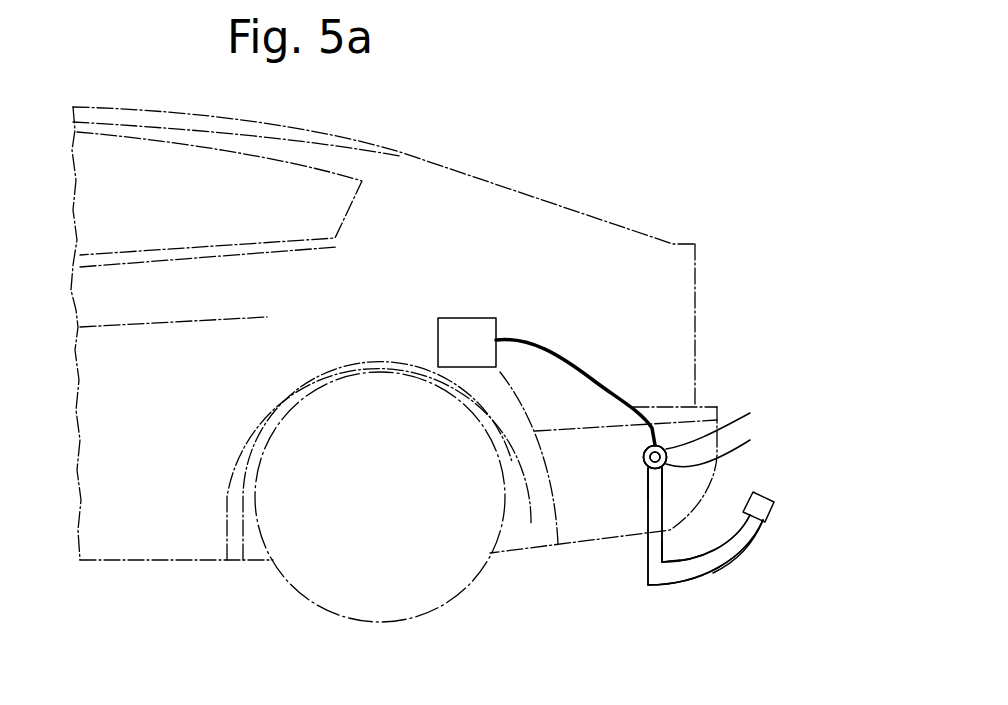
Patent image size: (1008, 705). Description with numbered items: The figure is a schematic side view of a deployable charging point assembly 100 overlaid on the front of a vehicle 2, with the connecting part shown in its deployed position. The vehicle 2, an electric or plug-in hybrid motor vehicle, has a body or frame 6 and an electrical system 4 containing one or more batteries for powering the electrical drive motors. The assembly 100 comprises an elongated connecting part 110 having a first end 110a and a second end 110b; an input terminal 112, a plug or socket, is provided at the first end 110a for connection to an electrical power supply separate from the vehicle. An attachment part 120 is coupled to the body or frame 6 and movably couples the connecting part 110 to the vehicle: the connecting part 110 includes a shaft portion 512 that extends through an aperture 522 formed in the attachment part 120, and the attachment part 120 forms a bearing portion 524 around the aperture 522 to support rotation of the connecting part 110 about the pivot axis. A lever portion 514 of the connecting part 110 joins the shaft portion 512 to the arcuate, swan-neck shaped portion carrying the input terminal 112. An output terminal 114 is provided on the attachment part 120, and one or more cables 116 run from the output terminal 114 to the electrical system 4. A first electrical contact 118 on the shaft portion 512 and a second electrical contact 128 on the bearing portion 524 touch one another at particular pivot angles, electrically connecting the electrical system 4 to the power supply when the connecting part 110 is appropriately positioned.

The vehicle 2 is at (600, 98).
The electrical system 4 is at (467, 318).
The body or frame 6 is at (585, 214).
The deployable charging point assembly 100 is at (612, 622).
The connecting part 110 is at (712, 557).
The first end 110a is at (751, 545).
The second end 110b is at (662, 573).
The input terminal 112 is at (764, 497).
The output terminal 114 is at (657, 445).
The cables 116 is at (590, 372).
The first electrical contact 118 is at (731, 446).
The attachment part 120 is at (731, 423).
The second electrical contact 128 is at (648, 468).
The shaft portion 512 is at (646, 460).
The lever portion 514 is at (647, 518).
The aperture 522 is at (662, 450).
The bearing portion 524 is at (644, 454).